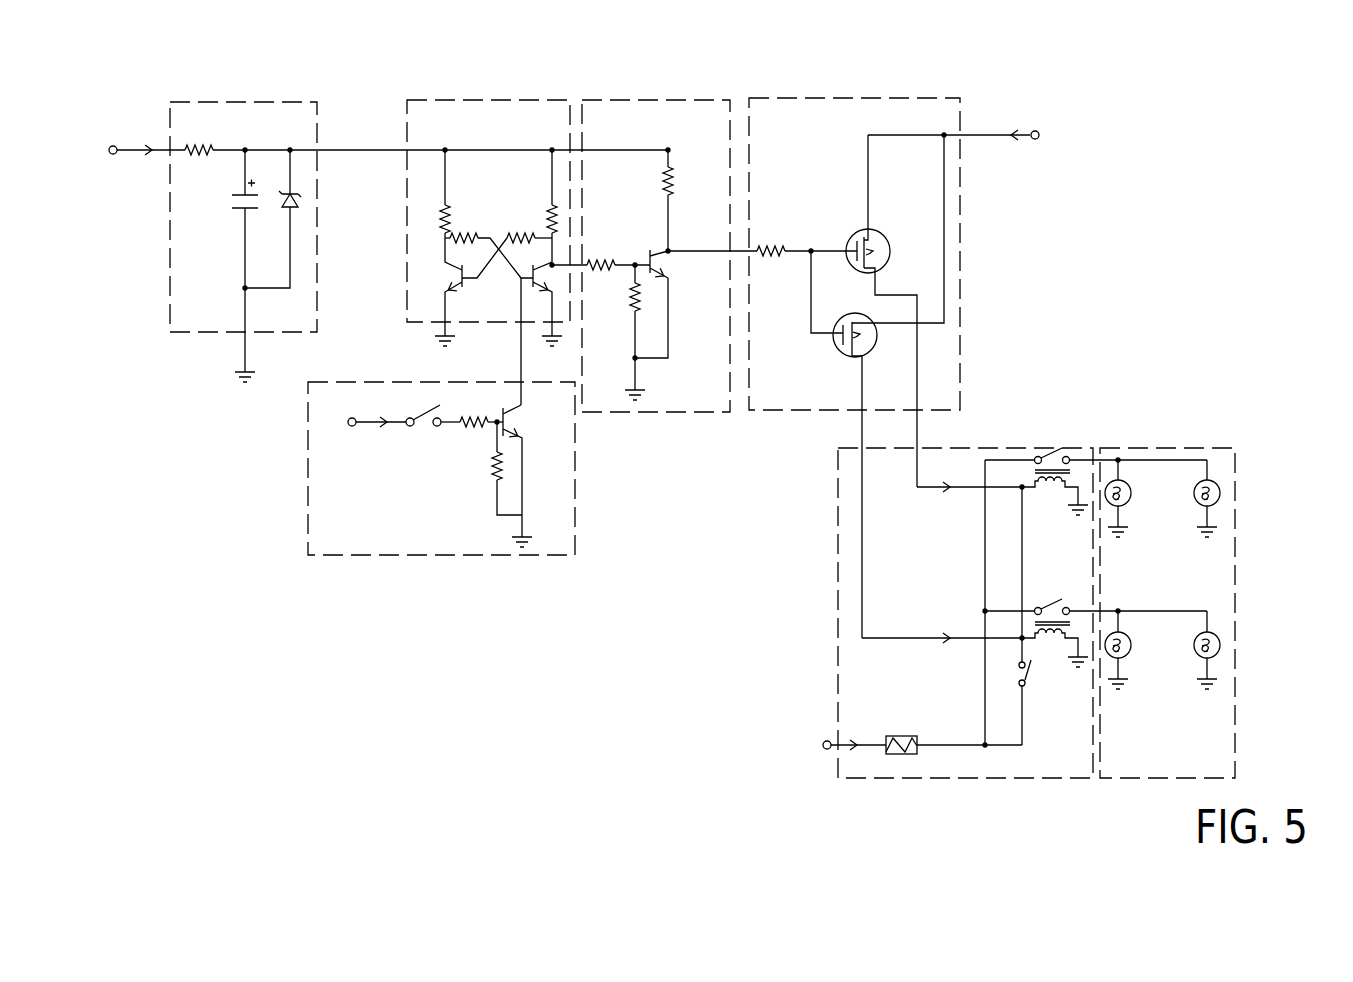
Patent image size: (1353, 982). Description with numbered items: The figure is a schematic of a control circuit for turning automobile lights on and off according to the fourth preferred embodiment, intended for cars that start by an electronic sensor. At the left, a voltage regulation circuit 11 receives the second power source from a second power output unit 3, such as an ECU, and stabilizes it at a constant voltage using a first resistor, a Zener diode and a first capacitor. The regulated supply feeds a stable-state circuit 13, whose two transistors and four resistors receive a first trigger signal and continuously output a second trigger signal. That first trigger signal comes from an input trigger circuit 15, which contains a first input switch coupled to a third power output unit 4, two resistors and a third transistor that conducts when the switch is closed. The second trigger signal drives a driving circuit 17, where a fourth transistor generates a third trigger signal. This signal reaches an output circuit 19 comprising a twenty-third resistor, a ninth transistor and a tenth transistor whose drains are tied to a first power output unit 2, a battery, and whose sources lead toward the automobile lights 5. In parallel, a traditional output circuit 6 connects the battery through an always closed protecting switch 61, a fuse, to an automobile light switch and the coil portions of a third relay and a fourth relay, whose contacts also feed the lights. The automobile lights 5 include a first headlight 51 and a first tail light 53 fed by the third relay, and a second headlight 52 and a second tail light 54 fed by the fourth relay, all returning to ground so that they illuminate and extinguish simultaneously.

The first power output unit 2 is at (1040, 138).
The second power output unit 3 is at (112, 156).
The third power output unit 4 is at (349, 424).
The automobile lights 5 is at (1181, 450).
The traditional output circuit 6 is at (837, 501).
The voltage regulation circuit 11 is at (241, 104).
The stable-state circuit 13 is at (482, 104).
The input trigger circuit 15 is at (335, 537).
The driving circuit 17 is at (663, 104).
The output circuit 19 is at (849, 104).
The first headlight 51 is at (1132, 493).
The second headlight 52 is at (1132, 645).
The first tail light 53 is at (1221, 493).
The second tail light 54 is at (1221, 645).
The always closed protecting switch 61 is at (902, 756).